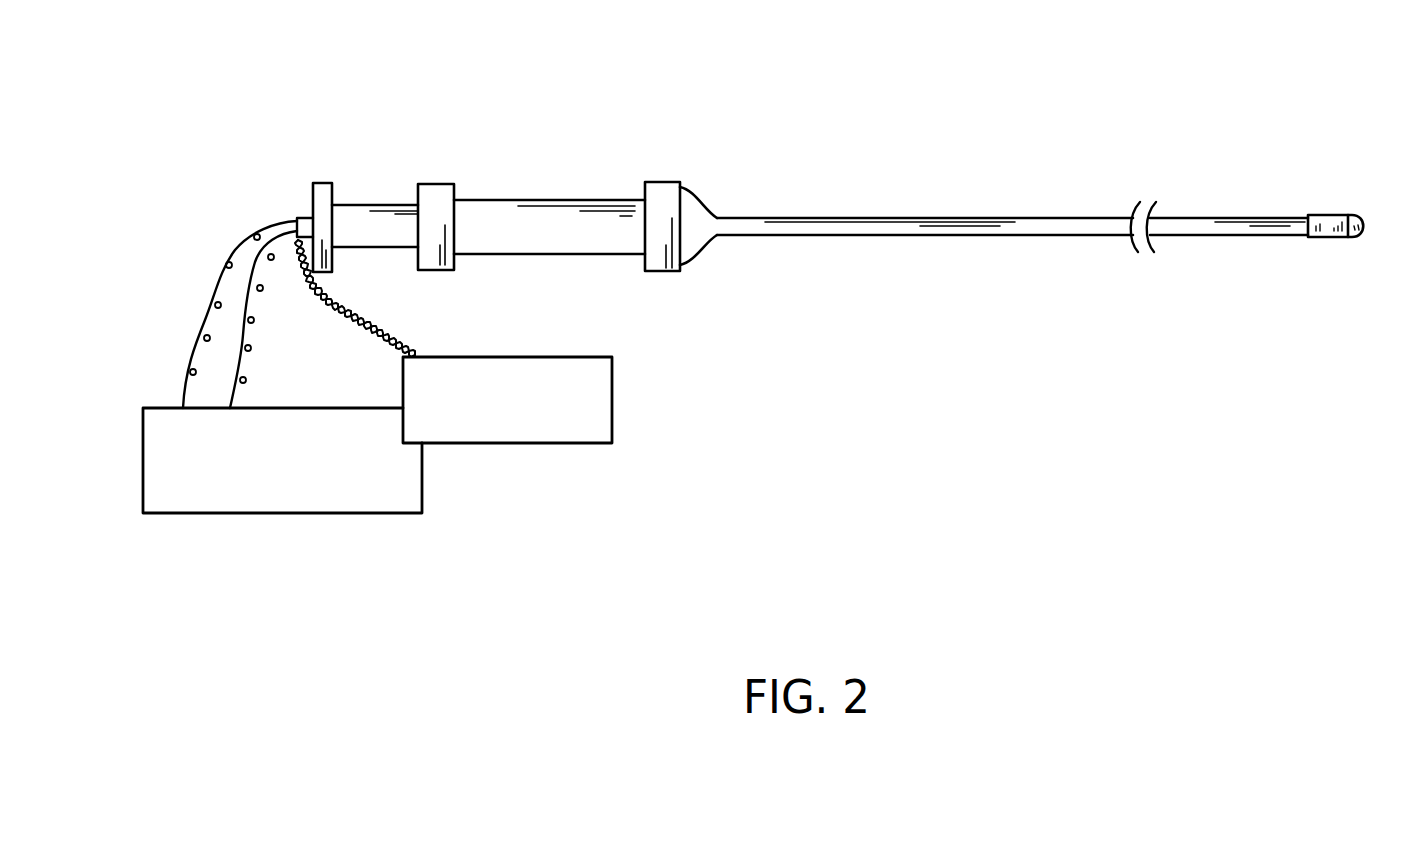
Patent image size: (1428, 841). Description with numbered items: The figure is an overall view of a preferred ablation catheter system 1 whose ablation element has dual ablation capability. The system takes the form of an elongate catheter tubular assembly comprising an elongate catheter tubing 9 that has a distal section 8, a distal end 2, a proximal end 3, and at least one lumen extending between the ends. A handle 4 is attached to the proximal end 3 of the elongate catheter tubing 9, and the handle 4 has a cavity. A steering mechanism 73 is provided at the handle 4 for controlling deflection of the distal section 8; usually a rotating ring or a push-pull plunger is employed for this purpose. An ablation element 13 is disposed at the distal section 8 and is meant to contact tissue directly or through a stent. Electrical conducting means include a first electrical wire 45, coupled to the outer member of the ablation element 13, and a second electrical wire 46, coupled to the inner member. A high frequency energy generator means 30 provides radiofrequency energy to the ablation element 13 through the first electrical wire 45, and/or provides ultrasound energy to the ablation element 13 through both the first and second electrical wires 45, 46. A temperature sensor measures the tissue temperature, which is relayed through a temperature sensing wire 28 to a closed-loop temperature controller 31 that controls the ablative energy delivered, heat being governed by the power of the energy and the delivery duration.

The ablation catheter system 1 is at (755, 130).
The distal end 2 is at (1365, 212).
The proximal end 3 is at (698, 197).
The handle 4 is at (508, 189).
The distal section 8 is at (1370, 172).
The elongate catheter tubing 9 is at (930, 208).
The ablation element 13 is at (1325, 243).
The temperature sensing wire 28 is at (393, 332).
The high frequency energy generator means 30 is at (407, 500).
The temperature controller 31 is at (607, 393).
The first electrical wire 45 is at (190, 337).
The second electrical wire 46 is at (248, 363).
The steering mechanism 73 is at (372, 196).